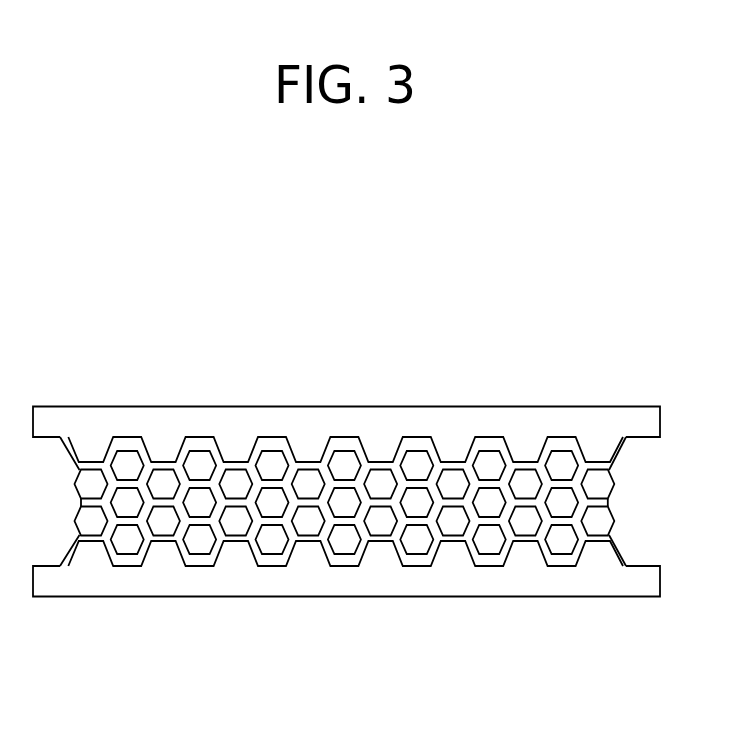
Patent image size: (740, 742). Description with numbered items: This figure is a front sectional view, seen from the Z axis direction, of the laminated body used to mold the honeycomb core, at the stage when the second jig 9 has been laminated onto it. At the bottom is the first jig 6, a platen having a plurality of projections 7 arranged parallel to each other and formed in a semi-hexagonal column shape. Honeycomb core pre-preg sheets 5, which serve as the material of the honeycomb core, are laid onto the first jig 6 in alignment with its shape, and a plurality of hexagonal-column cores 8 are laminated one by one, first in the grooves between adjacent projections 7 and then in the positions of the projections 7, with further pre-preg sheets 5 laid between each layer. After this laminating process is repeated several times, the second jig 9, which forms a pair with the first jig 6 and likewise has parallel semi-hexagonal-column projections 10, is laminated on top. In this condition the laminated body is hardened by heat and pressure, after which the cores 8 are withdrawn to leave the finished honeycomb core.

The honeycomb core pre-preg sheet 5 is at (218, 497).
The first jig 6 is at (343, 583).
The projections 7 is at (588, 552).
The cores 8 is at (523, 485).
The second jig 9 is at (343, 425).
The projections 10 is at (590, 452).